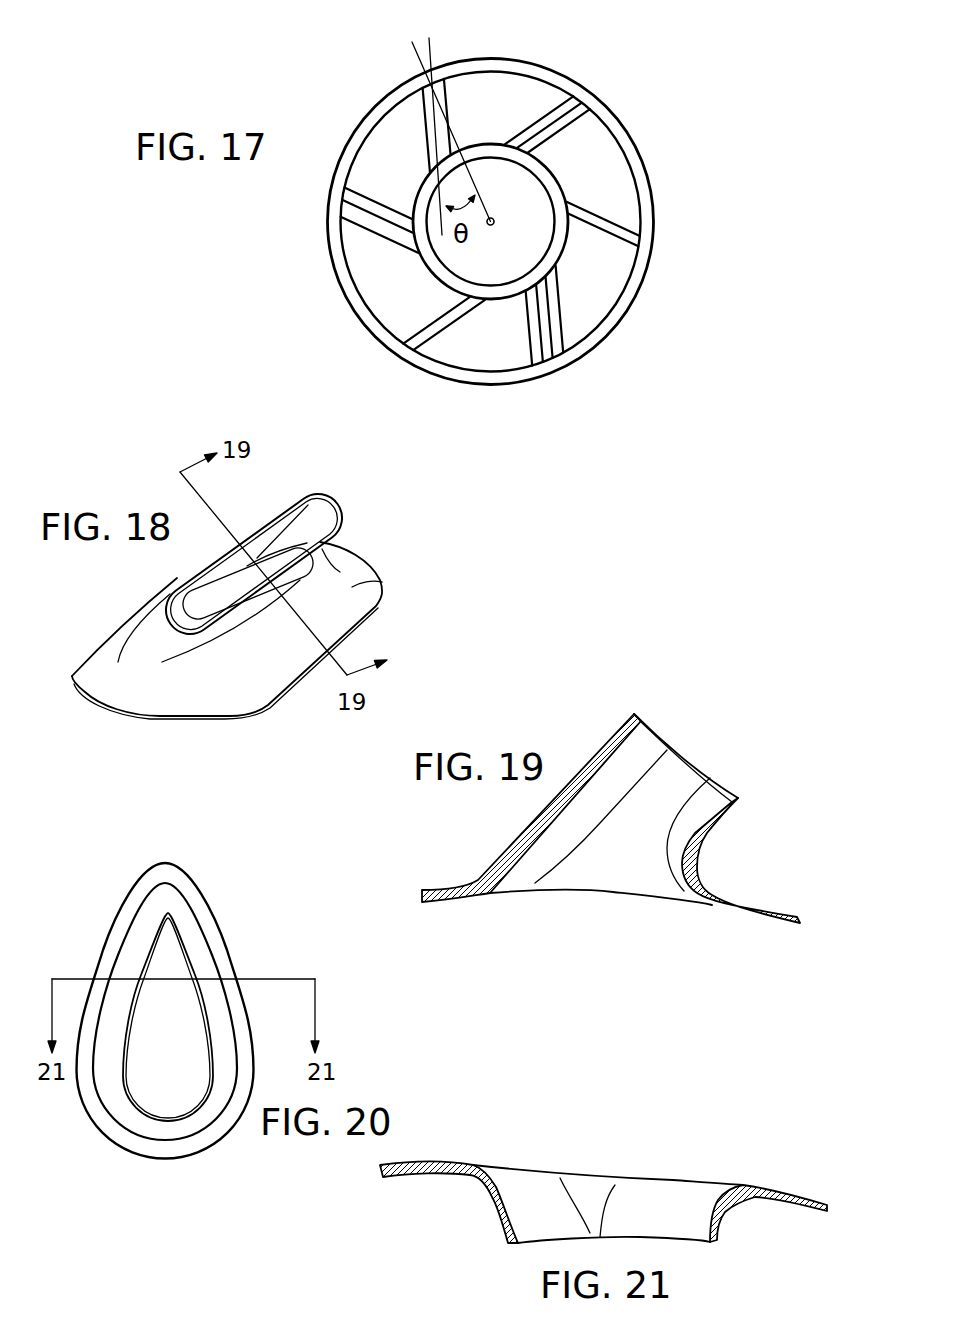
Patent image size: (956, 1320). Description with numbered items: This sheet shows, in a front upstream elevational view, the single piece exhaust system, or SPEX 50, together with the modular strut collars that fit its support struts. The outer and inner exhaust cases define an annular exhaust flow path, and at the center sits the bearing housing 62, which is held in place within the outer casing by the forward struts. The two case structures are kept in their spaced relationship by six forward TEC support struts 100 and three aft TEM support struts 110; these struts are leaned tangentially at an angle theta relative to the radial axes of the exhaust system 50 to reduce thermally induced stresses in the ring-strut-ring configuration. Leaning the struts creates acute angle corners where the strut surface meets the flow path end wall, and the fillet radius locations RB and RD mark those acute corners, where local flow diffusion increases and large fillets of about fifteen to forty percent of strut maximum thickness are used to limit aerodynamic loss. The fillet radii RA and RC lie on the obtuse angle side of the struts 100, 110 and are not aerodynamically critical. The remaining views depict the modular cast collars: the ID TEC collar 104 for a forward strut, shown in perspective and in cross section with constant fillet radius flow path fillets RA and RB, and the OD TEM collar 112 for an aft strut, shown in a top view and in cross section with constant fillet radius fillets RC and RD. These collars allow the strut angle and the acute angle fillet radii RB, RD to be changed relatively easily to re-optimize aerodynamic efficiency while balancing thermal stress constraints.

In FIG. 17, the SPEX (single piece exhaust system) 50 is at (696, 192).
In FIG. 17, the bearing housing 62 is at (491, 298).
In FIG. 17, the forward TEC support strut 100 is at (424, 101).
In FIG. 17, the aft TEM support strut 110 is at (567, 125).
In FIG. 18, the ID TEC collar 104 is at (382, 582).
In FIG. 19, the ID TEC collar 104 is at (618, 862).
In FIG. 20, the OD TEM collar 112 is at (237, 958).
In FIG. 21, the OD TEM collar 112 is at (672, 1203).
In FIG. 17, the fillet radius RA is at (570, 203).
In FIG. 19, the fillet radius RA is at (478, 872).
In FIG. 17, the fillet radius RB is at (568, 222).
In FIG. 19, the fillet radius RB is at (715, 877).
In FIG. 17, the fillet radius RC is at (517, 358).
In FIG. 21, the fillet radius RC is at (471, 1182).
In FIG. 17, the fillet radius RD is at (556, 350).
In FIG. 21, the fillet radius RD is at (744, 1213).